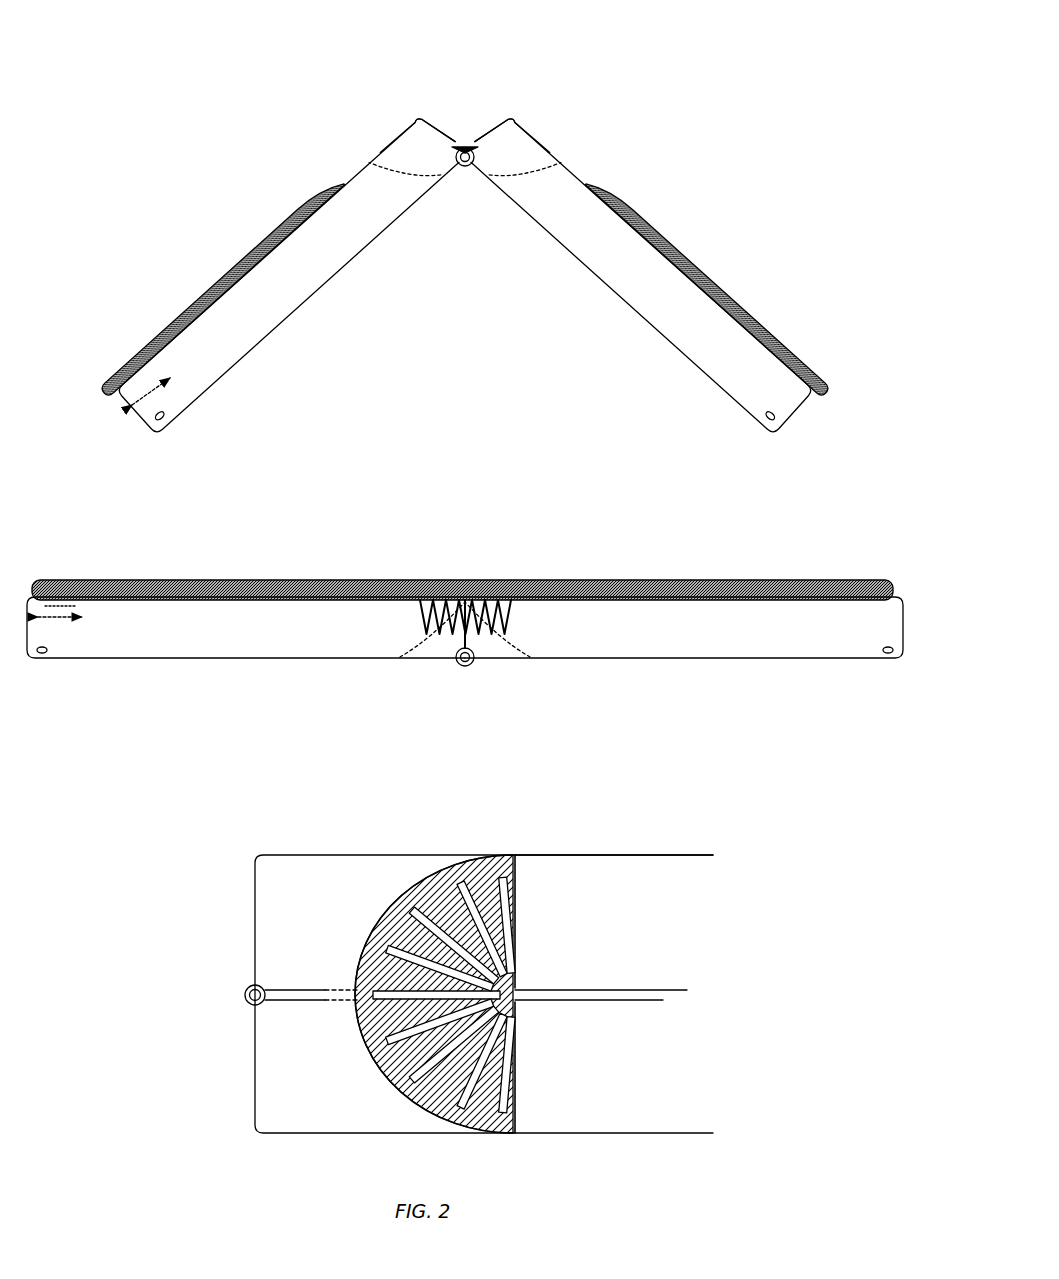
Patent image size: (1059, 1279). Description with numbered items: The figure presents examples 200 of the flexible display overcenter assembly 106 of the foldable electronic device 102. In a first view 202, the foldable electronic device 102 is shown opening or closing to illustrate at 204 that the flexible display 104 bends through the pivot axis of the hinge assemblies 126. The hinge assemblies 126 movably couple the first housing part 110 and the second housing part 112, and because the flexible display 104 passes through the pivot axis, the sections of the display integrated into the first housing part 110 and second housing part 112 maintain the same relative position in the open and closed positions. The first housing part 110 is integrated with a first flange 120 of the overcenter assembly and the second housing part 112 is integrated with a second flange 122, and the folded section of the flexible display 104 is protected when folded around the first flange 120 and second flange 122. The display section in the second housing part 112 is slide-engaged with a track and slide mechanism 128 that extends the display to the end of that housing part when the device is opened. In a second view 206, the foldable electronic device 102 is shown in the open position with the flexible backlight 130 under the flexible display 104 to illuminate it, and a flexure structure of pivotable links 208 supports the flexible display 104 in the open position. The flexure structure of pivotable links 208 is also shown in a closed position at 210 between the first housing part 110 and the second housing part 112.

The examples of the flexible display overcenter assembly 200 is at (757, 62).
The first view 202 is at (268, 148).
The bend of the flexible display through the pivot axis 204 is at (455, 125).
The second view 206 is at (436, 515).
The flexure structure of pivotable links 208 is at (432, 618).
The closed position of the flexure structure 210 is at (558, 826).
The foldable electronic device 102 is at (486, 254).
The flexible display 104 is at (645, 205).
The flexible display overcenter assembly 106 is at (452, 700).
The first housing part 110 is at (650, 310).
The second housing part 112 is at (275, 330).
The first flange 120 is at (520, 135).
The second flange 122 is at (412, 135).
The hinge assemblies 126 is at (472, 148).
The track and slide mechanism 128 is at (124, 374).
The flexible backlight 130 is at (486, 598).